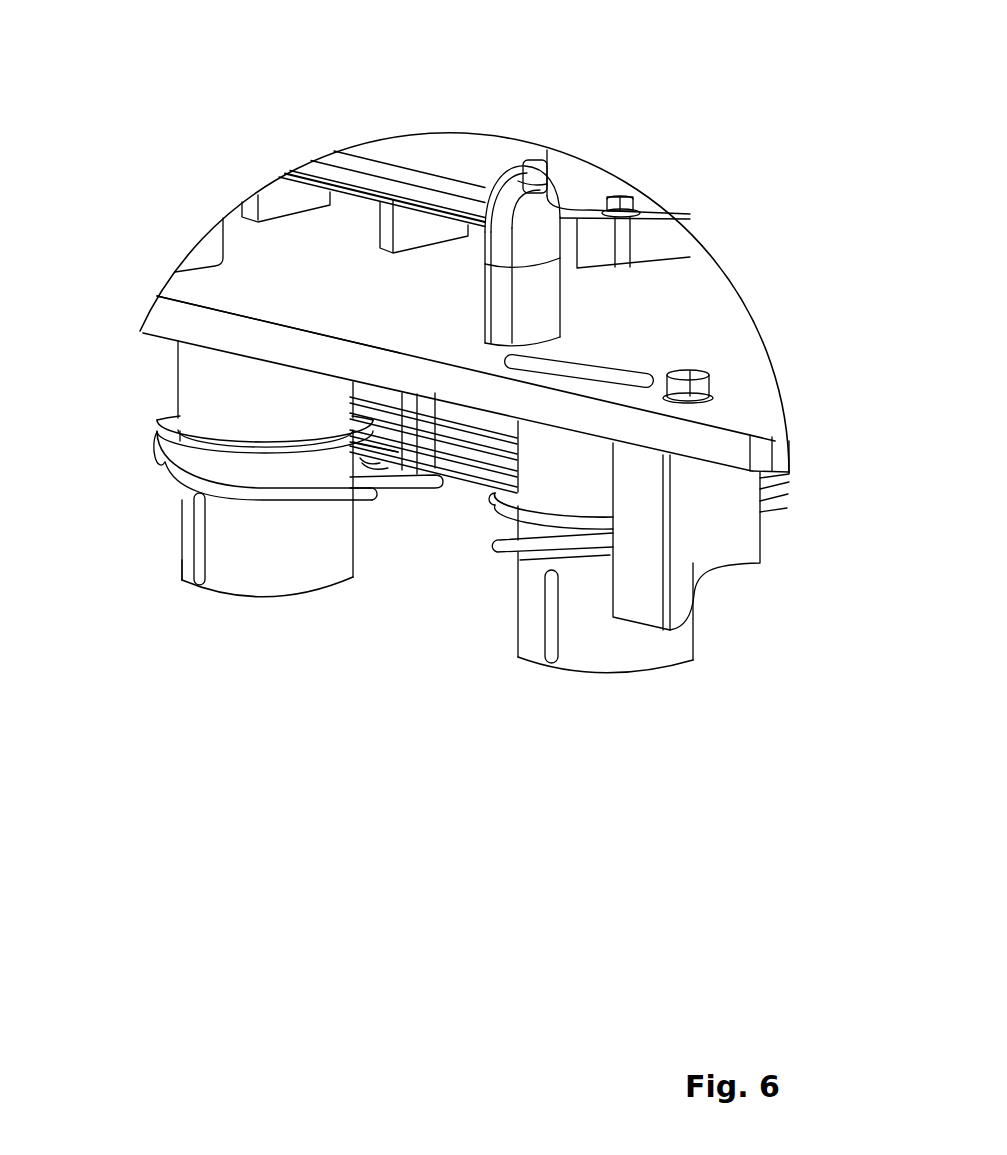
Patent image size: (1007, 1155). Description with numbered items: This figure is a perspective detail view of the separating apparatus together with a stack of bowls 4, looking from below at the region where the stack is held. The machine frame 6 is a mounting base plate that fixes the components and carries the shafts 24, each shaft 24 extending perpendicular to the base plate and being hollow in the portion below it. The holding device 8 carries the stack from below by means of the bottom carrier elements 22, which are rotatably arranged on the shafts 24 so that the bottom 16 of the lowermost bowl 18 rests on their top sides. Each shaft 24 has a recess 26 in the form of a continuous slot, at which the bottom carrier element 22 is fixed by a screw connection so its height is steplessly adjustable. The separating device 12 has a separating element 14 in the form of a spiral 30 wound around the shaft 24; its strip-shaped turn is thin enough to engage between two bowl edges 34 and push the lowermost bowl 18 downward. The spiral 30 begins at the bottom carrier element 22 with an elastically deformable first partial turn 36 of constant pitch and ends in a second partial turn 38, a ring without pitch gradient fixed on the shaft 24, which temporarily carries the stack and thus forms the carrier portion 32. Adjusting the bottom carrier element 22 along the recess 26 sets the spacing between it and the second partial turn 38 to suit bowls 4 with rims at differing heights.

The bowl 4 is at (470, 436).
The machine frame 6 is at (700, 293).
The holding device 8 is at (130, 605).
The separating device 12 is at (143, 468).
The separating element 14 is at (261, 449).
The bottom 16 is at (487, 470).
The lowermost bowl 18 is at (511, 465).
The bottom carrier element 22 is at (410, 475).
The shaft 24 is at (220, 583).
The recess 26 is at (190, 583).
The spiral 30 is at (145, 372).
The carrier portion 32 is at (362, 426).
The bowl edge 34 is at (380, 401).
The first partial turn 36 is at (173, 453).
The second partial turn 38 is at (173, 417).